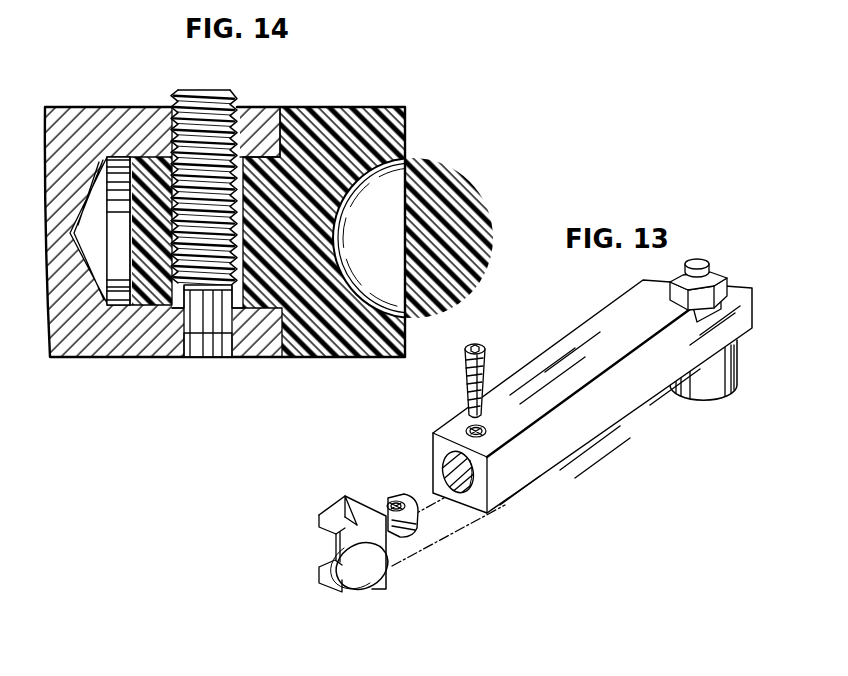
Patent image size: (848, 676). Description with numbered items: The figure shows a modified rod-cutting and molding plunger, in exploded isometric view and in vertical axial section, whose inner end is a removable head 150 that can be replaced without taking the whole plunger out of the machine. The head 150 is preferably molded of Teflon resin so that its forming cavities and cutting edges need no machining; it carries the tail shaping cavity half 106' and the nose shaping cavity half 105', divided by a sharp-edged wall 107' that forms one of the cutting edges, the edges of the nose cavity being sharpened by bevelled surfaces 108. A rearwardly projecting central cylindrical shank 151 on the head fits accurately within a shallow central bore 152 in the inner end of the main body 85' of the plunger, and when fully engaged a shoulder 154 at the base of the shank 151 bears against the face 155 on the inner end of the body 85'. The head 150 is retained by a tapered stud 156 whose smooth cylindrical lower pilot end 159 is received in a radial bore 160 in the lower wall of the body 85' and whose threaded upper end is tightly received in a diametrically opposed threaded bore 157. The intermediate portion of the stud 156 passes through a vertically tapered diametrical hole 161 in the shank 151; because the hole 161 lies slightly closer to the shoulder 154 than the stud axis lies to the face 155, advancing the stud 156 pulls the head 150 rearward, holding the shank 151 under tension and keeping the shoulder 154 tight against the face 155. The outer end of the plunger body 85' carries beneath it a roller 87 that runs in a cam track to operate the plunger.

In FIG. 14, the main body of the plunger 85' is at (219, 251).
In FIG. 13, the main body of the plunger 85' is at (421, 497).
In FIG. 13, the roller 87 is at (730, 382).
In FIG. 14, the nose shaping cavity half 105' is at (413, 238).
In FIG. 13, the nose shaping cavity half 105' is at (362, 573).
In FIG. 13, the tail shaping cavity half 106' is at (306, 570).
In FIG. 13, the sharp-edged wall 107' is at (314, 526).
In FIG. 13, the bevelled surfaces 108 is at (355, 525).
In FIG. 14, the removable head 150 is at (345, 127).
In FIG. 13, the removable head 150 is at (332, 510).
In FIG. 14, the central cylindrical shank 151 is at (152, 160).
In FIG. 13, the central cylindrical shank 151 is at (413, 528).
In FIG. 14, the central bore 152 is at (122, 307).
In FIG. 13, the central bore 152 is at (434, 452).
In FIG. 14, the shoulder 154 is at (277, 357).
In FIG. 14, the face 155 is at (285, 127).
In FIG. 13, the face 155 is at (480, 500).
In FIG. 14, the tapered stud 156 is at (212, 92).
In FIG. 13, the tapered stud 156 is at (484, 344).
In FIG. 14, the threaded bore 157 is at (250, 108).
In FIG. 13, the threaded bore 157 is at (487, 415).
In FIG. 14, the screw shank 159 is at (208, 327).
In FIG. 14, the radial bore 160 is at (190, 360).
In FIG. 14, the diametrical hole 161 is at (233, 317).
In FIG. 13, the diametrical hole 161 is at (388, 500).